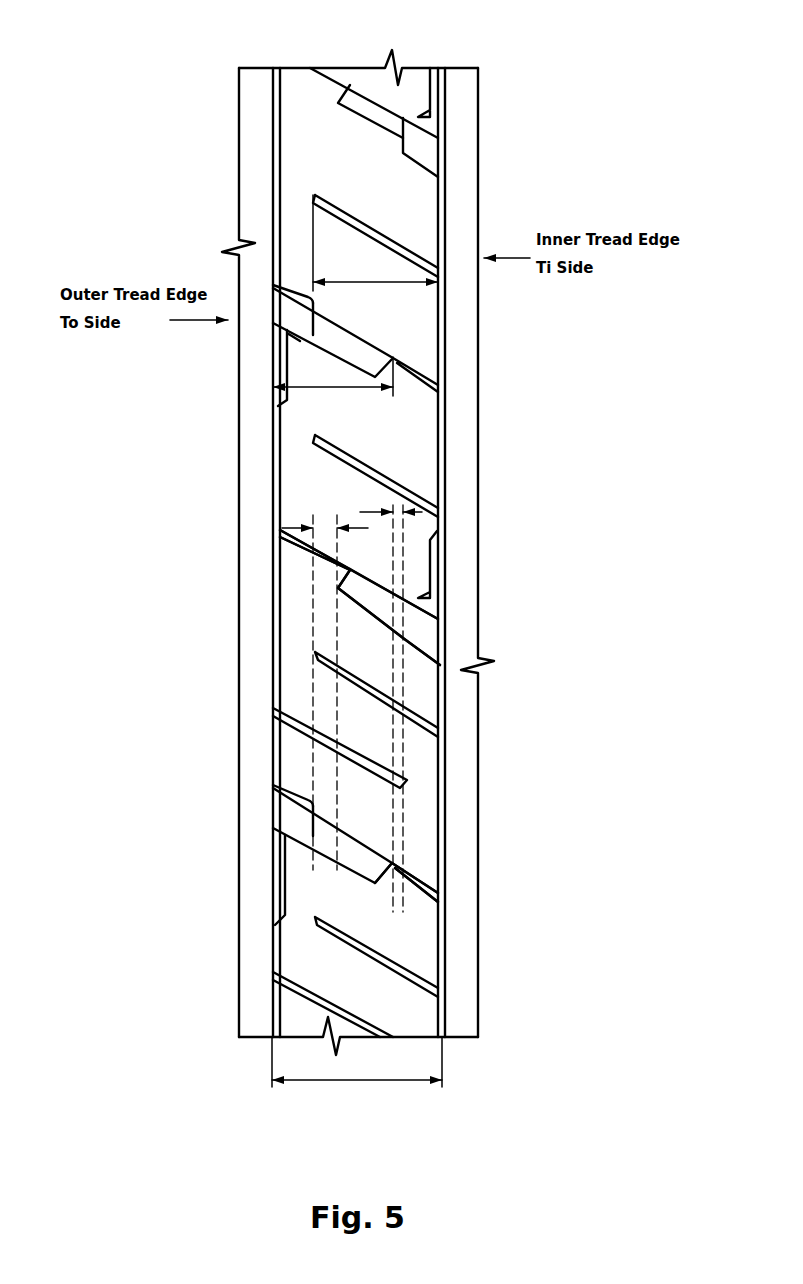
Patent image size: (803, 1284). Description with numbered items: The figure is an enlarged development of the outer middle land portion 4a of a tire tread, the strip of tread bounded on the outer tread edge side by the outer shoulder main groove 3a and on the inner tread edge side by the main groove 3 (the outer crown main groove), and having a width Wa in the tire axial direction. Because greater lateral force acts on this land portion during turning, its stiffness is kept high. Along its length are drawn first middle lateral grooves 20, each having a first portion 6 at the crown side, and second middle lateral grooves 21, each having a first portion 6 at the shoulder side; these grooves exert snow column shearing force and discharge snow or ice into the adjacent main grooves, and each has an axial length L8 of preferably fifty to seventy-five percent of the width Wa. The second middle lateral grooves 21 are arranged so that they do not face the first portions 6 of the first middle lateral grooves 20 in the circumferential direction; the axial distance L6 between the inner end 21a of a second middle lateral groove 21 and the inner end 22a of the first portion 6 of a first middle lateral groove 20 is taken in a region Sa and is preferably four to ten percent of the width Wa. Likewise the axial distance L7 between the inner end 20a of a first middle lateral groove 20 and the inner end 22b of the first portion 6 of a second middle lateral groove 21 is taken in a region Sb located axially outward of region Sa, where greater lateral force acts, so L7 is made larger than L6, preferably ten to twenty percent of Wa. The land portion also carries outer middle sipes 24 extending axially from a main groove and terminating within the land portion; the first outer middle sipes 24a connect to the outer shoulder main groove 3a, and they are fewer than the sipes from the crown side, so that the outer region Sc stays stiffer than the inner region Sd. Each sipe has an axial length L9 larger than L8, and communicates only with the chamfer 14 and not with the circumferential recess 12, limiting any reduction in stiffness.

The outer shoulder main groove 3a is at (256, 100).
The main groove 3 is at (461, 114).
The outer middle land portion 4a is at (316, 117).
The chamfer 14 is at (441, 428).
The circumferential recess 12 is at (437, 581).
The first portion 6 is at (427, 627).
The outer middle sipe 24 is at (367, 223).
The first outer middle sipe 24a is at (368, 763).
The first middle lateral groove 20 is at (367, 590).
The inner end of first middle lateral groove 20a is at (366, 590).
The inner end of first portion of first middle lateral groove 22a is at (403, 633).
The inner end of first portion of second middle lateral groove 22b is at (325, 802).
The second middle lateral groove 21 is at (372, 858).
The inner end of second middle lateral groove 21a is at (385, 875).
The region where distance L6 is taken Sa is at (399, 914).
The region where distance L7 is taken Sb is at (322, 873).
The region at outer side of outer middle land portion Sc is at (296, 228).
The region at inner side of outer middle land portion Sd is at (427, 232).
The distance L6 is at (401, 510).
The distance L7 is at (322, 520).
The length L8 is at (320, 392).
The length L9 is at (380, 284).
The width of outer middle land portion Wa is at (357, 1075).